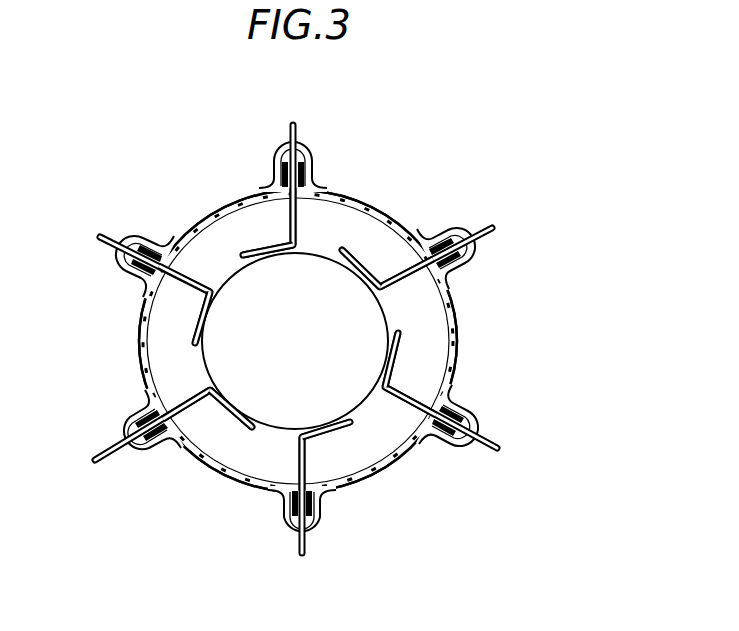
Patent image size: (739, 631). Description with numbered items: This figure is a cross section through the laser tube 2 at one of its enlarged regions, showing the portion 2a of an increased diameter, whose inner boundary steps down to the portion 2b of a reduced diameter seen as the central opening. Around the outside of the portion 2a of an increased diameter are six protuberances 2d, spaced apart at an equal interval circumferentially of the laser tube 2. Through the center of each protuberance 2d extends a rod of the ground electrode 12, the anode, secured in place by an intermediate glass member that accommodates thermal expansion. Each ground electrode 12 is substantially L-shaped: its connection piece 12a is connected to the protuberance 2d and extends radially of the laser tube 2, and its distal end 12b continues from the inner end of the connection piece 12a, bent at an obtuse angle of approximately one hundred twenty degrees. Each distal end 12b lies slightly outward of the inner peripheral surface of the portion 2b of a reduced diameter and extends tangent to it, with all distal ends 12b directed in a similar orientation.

The laser tube 2 is at (390, 210).
The portion of an increased diameter 2a is at (457, 319).
The portion of a reduced diameter 2b is at (325, 258).
The protuberance 2d is at (313, 175).
The ground electrode 12 is at (298, 128).
The connection piece 12a is at (297, 236).
The distal end 12b is at (267, 243).